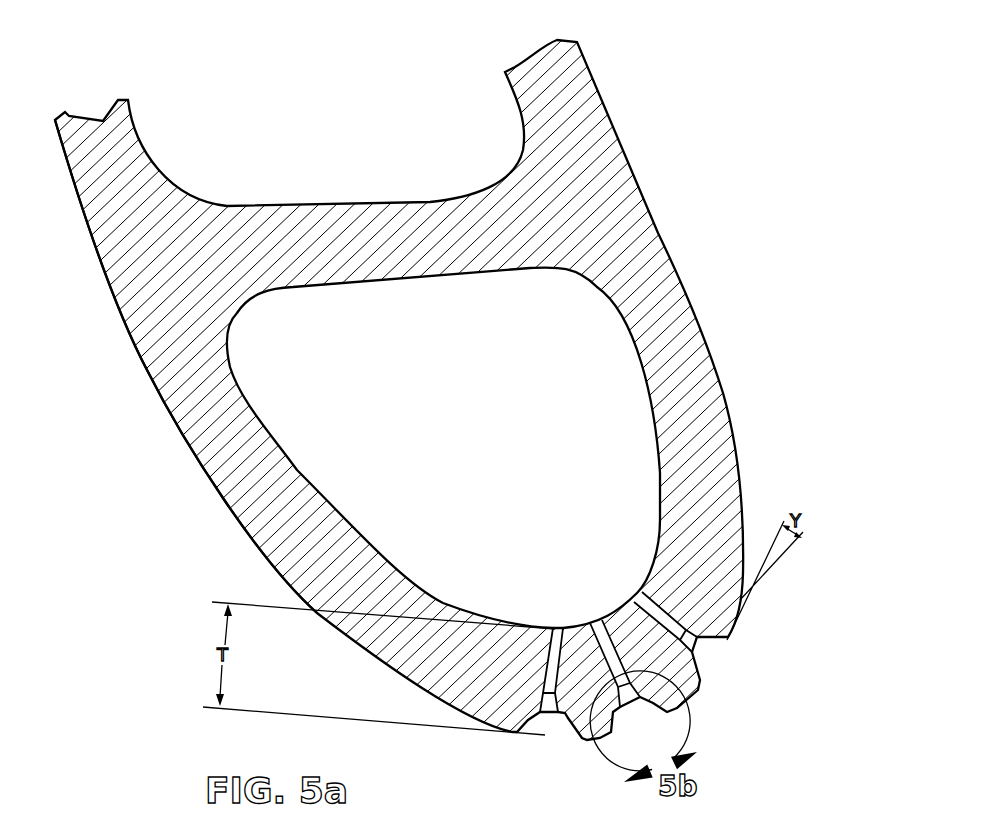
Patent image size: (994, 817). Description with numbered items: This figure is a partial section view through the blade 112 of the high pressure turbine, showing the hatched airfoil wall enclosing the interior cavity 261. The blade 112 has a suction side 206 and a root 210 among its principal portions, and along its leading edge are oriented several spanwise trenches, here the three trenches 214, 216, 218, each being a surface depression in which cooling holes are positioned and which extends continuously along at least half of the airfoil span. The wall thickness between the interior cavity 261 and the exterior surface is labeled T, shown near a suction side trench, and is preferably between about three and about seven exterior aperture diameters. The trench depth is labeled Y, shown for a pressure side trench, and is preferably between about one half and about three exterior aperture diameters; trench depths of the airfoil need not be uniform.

The blade 112 is at (192, 541).
The suction side 206 is at (160, 400).
The root 210 is at (613, 120).
The interior cavity 261 is at (503, 448).
The trench 214 is at (547, 721).
The trench 216 is at (637, 708).
The trench 218 is at (702, 648).